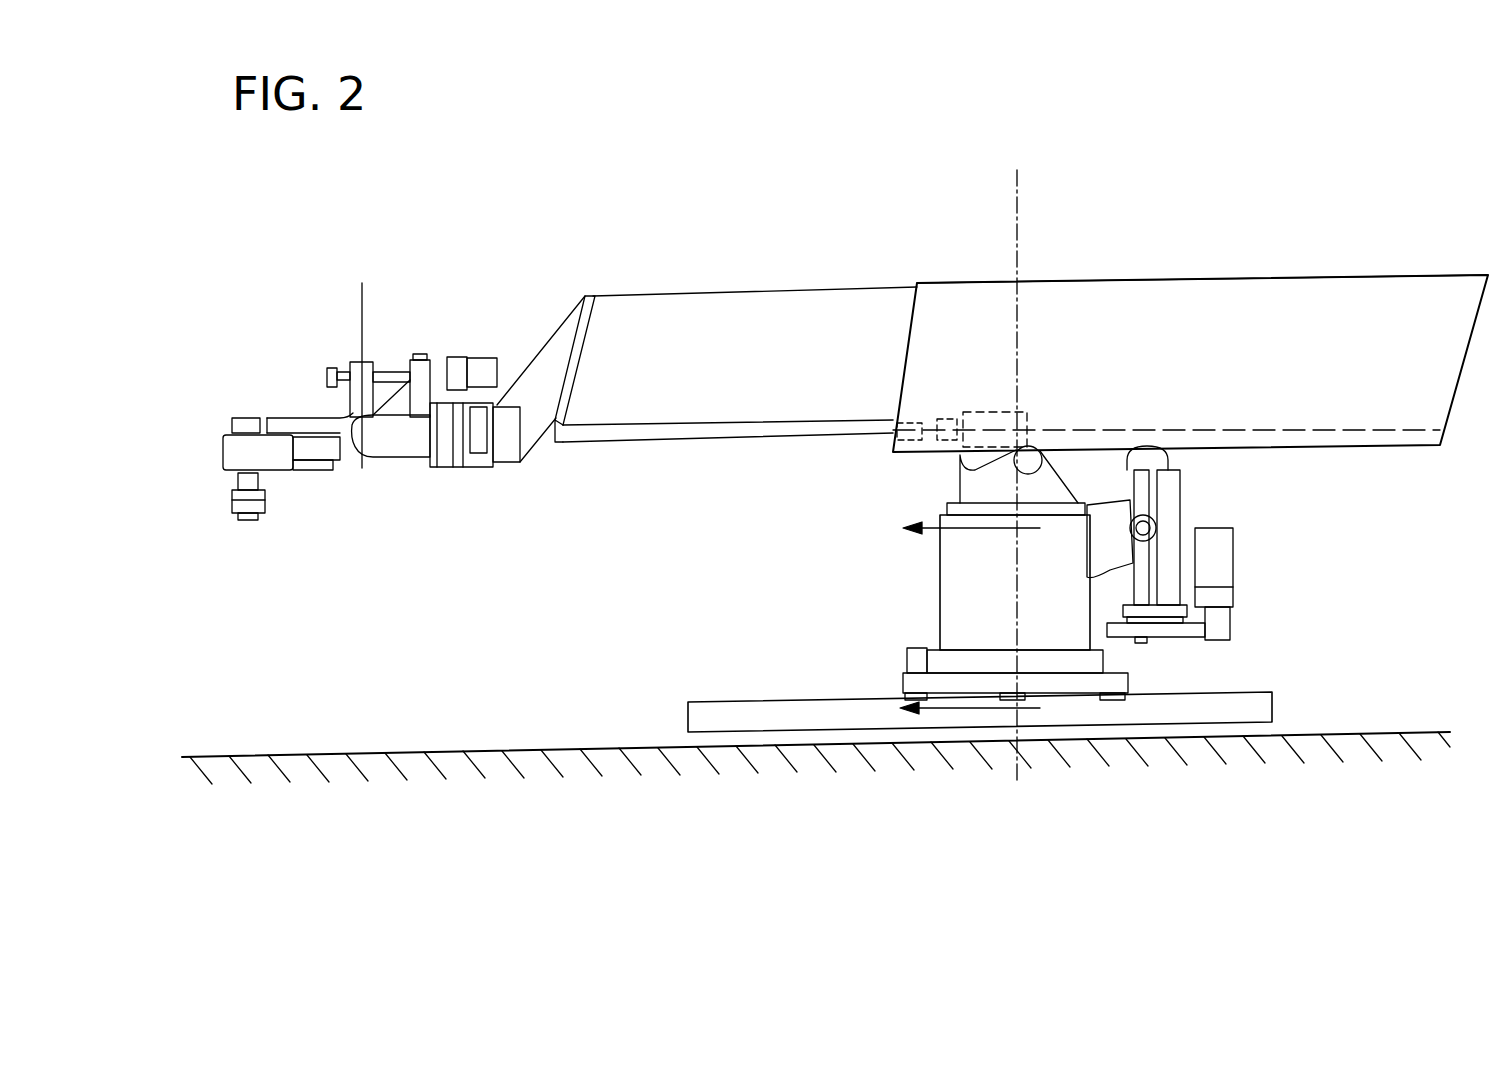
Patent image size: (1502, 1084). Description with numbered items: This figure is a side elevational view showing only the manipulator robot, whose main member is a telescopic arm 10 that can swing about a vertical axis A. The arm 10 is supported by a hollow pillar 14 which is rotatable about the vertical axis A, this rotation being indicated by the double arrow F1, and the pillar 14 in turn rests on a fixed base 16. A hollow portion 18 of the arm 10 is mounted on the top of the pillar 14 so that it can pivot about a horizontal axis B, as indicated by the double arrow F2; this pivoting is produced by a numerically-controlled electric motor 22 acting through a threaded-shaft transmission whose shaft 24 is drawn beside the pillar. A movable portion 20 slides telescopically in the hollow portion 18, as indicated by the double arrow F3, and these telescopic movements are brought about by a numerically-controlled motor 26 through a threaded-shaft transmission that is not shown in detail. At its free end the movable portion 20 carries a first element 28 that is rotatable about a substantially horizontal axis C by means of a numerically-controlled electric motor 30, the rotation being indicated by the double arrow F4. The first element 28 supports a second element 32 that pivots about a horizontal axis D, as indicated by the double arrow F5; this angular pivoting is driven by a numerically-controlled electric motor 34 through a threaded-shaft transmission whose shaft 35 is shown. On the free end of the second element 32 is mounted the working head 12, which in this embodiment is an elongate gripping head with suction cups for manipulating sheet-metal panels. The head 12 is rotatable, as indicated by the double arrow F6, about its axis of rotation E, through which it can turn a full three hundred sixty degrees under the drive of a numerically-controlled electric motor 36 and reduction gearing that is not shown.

The telescopic arm 10 is at (1060, 270).
The working head 12 is at (243, 535).
The hollow pillar 14 is at (987, 582).
The fixed base 16 is at (785, 717).
The hollow portion 18 is at (1200, 305).
The movable portion 20 is at (630, 315).
The numerically-controlled electric motor 22 is at (1226, 567).
The shaft 24 is at (1165, 495).
The numerically-controlled motor 26 is at (988, 412).
The first element 28 is at (486, 480).
The numerically-controlled electric motor 30 is at (501, 410).
The second element 32 is at (331, 480).
The numerically-controlled electric motor 34 is at (472, 365).
The shaft 35 is at (376, 370).
The numerically-controlled electric motor 36 is at (300, 472).
The vertical axis A is at (977, 247).
The horizontal axis B is at (1030, 452).
The substantially horizontal axis C is at (414, 440).
The horizontal axis D is at (323, 401).
The axis of rotation E is at (223, 467).
The double arrow F1 is at (848, 616).
The double arrow F2 is at (1339, 457).
The double arrow F3 is at (767, 224).
The double arrow F4 is at (202, 407).
The double arrow F5 is at (362, 258).
The double arrow F6 is at (315, 604).